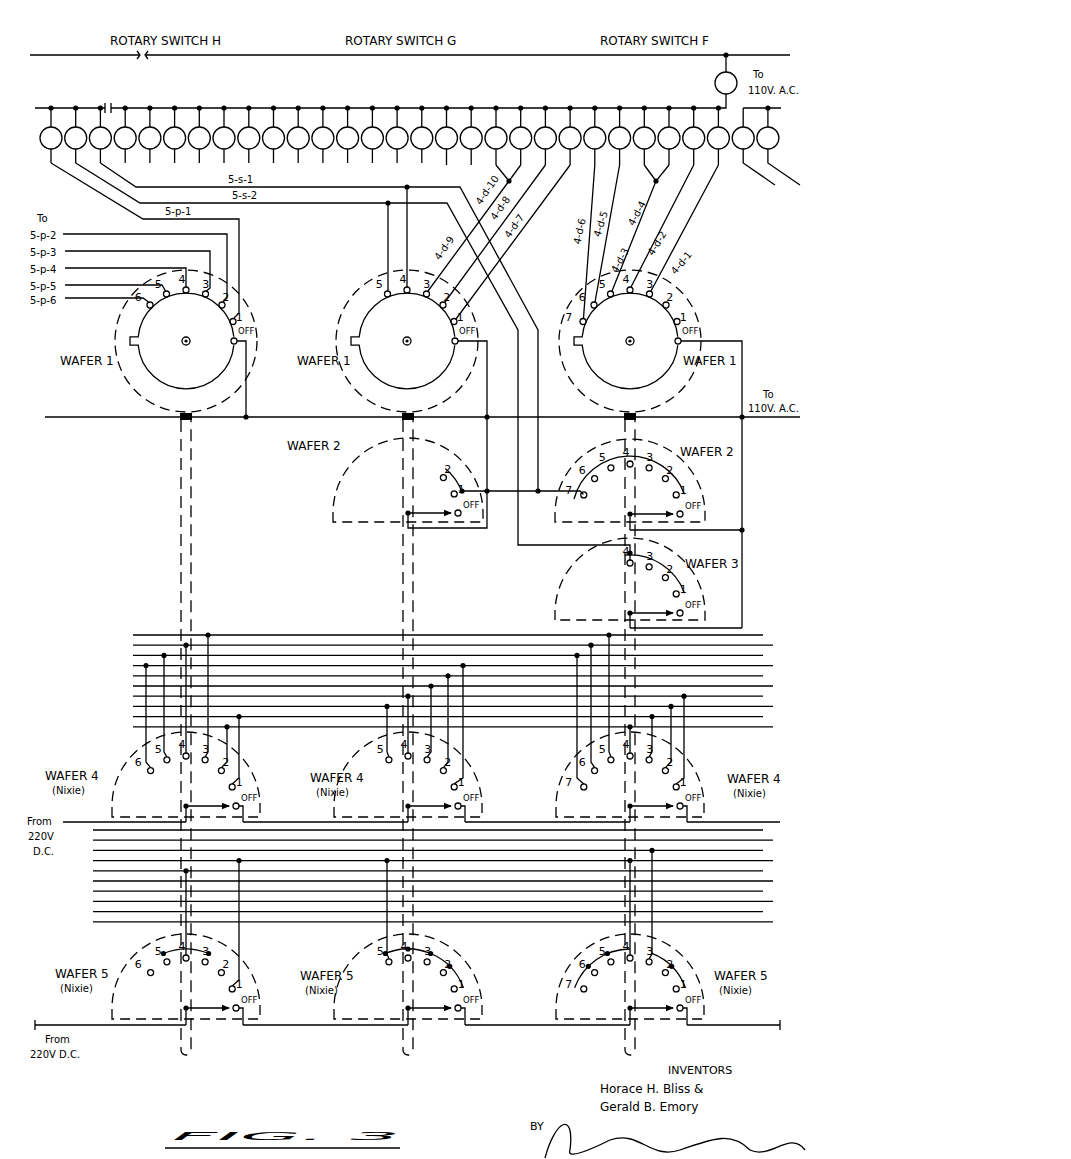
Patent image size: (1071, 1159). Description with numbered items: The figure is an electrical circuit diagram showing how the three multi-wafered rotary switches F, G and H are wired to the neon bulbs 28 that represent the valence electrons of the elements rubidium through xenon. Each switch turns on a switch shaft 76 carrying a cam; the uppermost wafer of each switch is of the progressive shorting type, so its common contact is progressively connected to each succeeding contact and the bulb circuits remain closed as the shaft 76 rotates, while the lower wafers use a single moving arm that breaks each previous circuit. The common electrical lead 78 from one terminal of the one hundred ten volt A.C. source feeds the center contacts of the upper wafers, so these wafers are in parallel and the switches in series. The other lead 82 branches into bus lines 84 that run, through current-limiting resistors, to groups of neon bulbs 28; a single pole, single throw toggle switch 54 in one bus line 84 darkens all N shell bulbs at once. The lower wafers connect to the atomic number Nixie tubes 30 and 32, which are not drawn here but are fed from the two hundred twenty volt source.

The neon bulbs 28 is at (420, 146).
The electrical lead 82 is at (529, 58).
The bus lines 84 is at (660, 107).
The single pole, single throw toggle switch 54 is at (715, 82).
The switch shaft 76 is at (194, 527).
The common electrical lead 78 is at (752, 428).
The atomic number Nixie tube 30 is at (137, 732).
The atomic number Nixie tube 32 is at (97, 826).